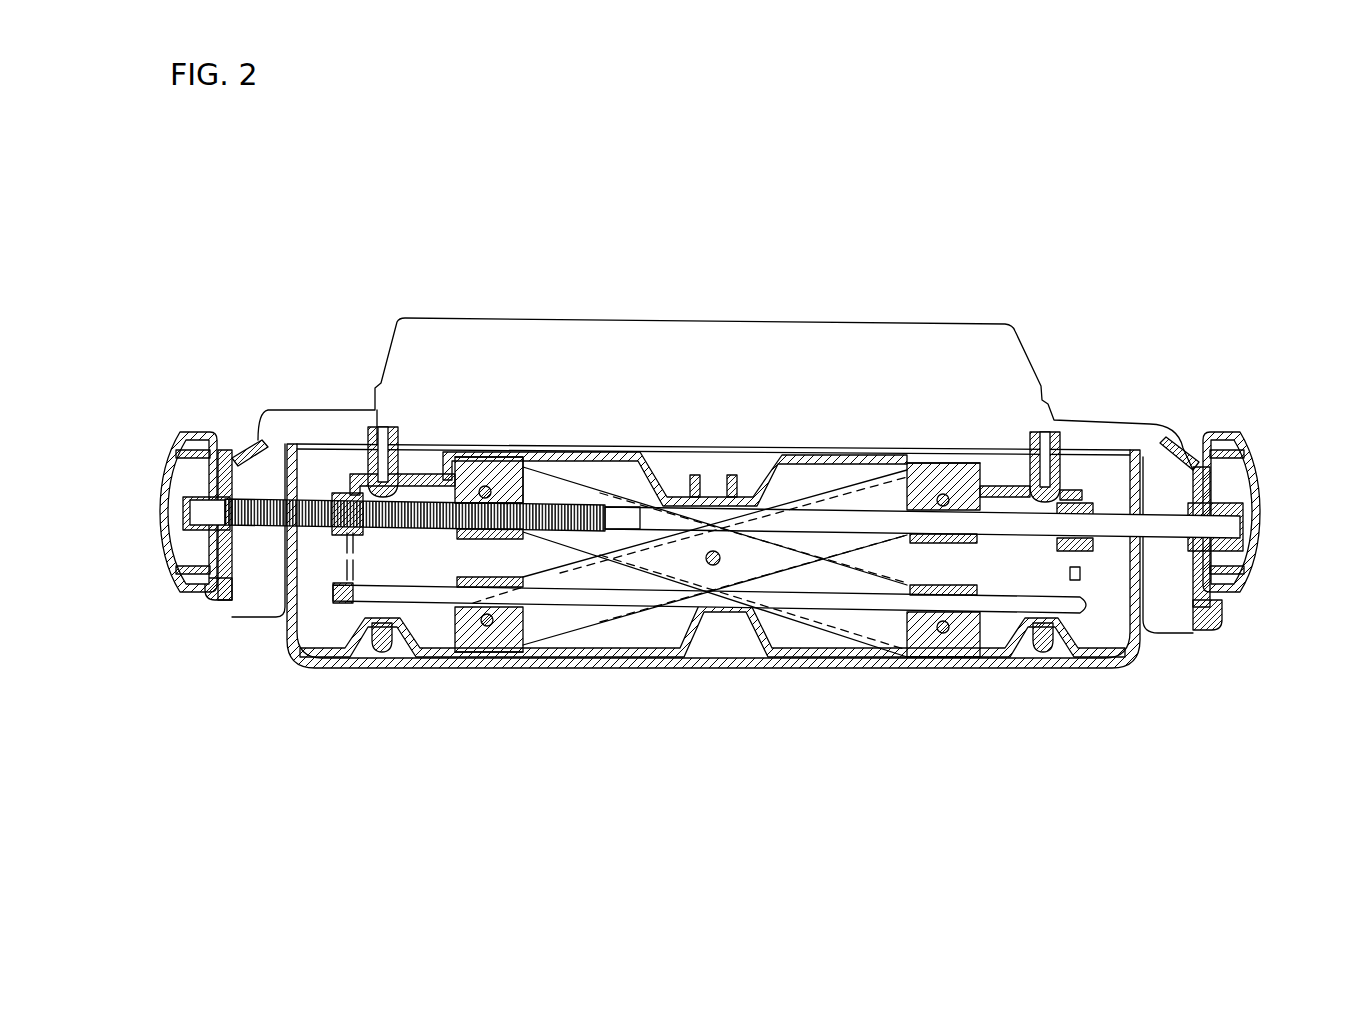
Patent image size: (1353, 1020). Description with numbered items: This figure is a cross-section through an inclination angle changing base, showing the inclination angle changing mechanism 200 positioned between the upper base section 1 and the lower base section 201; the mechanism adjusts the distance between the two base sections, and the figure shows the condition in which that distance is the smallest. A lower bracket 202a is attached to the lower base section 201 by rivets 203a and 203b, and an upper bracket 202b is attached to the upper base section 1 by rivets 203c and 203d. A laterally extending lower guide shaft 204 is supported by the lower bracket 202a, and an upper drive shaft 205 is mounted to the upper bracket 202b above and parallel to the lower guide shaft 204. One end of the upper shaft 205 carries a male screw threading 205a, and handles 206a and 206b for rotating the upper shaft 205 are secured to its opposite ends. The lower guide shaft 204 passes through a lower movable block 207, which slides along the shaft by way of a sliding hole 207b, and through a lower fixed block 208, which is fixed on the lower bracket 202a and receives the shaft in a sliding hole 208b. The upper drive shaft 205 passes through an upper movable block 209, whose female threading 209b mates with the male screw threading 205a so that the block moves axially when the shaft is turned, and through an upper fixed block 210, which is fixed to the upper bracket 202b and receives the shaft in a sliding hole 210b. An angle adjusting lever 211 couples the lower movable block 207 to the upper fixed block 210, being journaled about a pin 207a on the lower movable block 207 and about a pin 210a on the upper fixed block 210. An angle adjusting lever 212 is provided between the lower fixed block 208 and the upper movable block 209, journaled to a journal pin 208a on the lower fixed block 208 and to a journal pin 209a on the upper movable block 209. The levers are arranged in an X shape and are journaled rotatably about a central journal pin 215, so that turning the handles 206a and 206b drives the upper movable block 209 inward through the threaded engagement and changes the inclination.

The upper base section 1 is at (1007, 326).
The inclination angle changing mechanism 200 is at (1140, 690).
The lower base section 201 is at (723, 662).
The lower bracket 202a is at (703, 658).
The upper bracket 202b is at (660, 453).
The rivet 203a is at (382, 653).
The rivet 203b is at (1043, 653).
The rivet 203c is at (378, 428).
The rivet 203d is at (1047, 432).
The lower guide shaft 204 is at (645, 600).
The upper drive shaft 205 is at (637, 512).
The male screw threading 205a is at (587, 500).
The handle 206a is at (192, 432).
The handle 206b is at (1225, 432).
The lower movable block 207 is at (503, 655).
The pin 207a is at (480, 655).
The sliding hole 207b is at (450, 578).
The lower fixed block 208 is at (907, 657).
The journal pin 208a is at (957, 657).
The sliding hole 208b is at (970, 580).
The upper movable block 209 is at (512, 457).
The journal pin 209a is at (483, 457).
The female threading 209b is at (502, 553).
The upper fixed block 210 is at (950, 463).
The pin 210a is at (920, 463).
The sliding hole 210b is at (931, 562).
The angle adjusting lever 211 is at (583, 613).
The angle adjusting lever 212 is at (880, 613).
The journal pin 215 is at (718, 565).